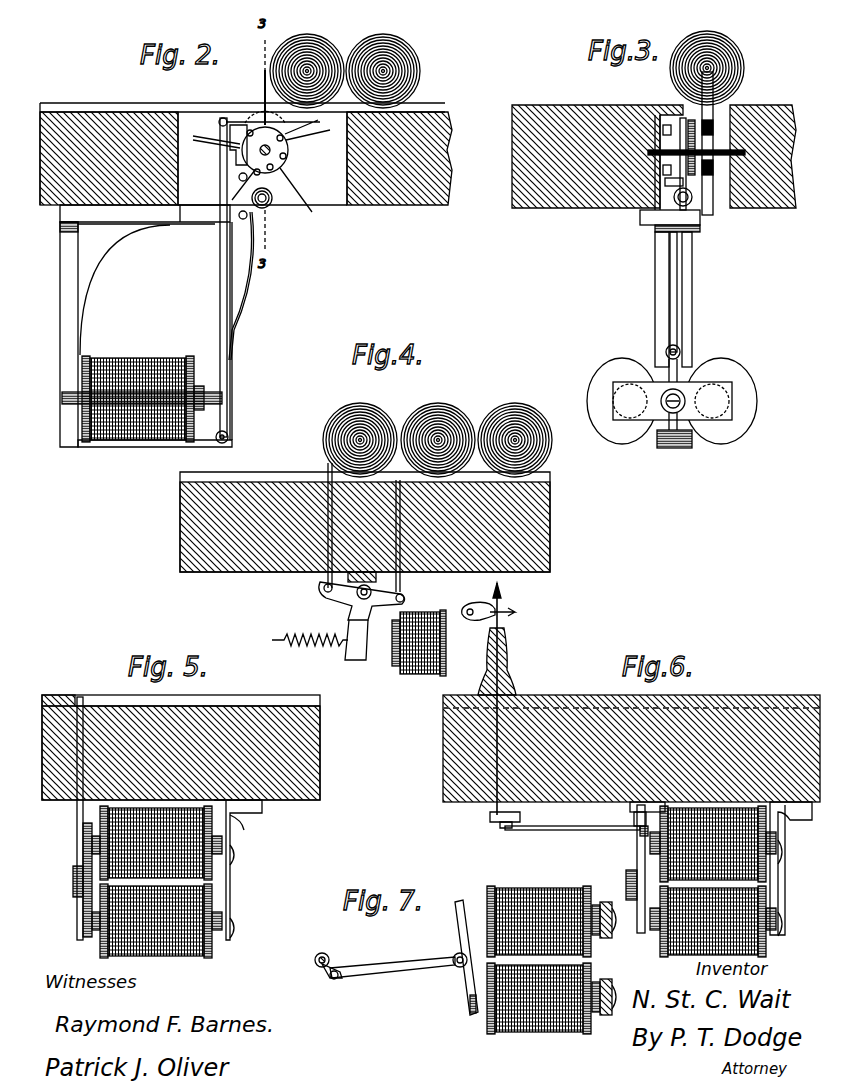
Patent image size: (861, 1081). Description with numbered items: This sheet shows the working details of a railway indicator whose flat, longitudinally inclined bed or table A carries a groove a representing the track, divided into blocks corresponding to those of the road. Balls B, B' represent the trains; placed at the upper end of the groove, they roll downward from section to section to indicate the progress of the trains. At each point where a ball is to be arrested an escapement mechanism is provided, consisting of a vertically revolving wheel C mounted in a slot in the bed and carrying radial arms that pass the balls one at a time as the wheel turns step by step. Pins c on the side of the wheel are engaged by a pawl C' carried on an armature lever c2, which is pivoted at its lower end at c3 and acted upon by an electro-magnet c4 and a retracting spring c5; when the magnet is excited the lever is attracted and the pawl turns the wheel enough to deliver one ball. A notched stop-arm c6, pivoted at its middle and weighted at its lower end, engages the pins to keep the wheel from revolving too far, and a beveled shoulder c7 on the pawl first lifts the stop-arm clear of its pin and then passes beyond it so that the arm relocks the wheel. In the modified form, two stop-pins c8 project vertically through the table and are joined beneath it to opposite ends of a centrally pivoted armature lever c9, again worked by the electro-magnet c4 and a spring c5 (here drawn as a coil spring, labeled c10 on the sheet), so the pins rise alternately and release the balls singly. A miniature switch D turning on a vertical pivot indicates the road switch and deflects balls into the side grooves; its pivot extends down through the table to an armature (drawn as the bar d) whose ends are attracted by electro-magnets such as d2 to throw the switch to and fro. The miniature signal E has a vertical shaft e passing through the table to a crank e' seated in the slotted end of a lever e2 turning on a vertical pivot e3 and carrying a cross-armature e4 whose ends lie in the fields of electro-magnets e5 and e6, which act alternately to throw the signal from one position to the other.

In FIG. 2, the groove a is at (440, 104).
In FIG. 2, the bed or table A is at (257, 275).
In FIG. 2, the ball B is at (307, 61).
In FIG. 3, the ball B is at (715, 68).
In FIG. 2, the ball B' is at (383, 61).
In FIG. 2, the escapement wheel C is at (276, 142).
In FIG. 3, the escapement wheel C is at (715, 143).
In FIG. 2, the pawl C' is at (261, 158).
In FIG. 3, the pawl C' is at (657, 144).
In FIG. 2, the pins c is at (266, 154).
In FIG. 3, the pins c is at (665, 128).
In FIG. 2, the armature lever c2 is at (220, 170).
In FIG. 2, the pivot c3 is at (229, 437).
In FIG. 3, the pivot c3 is at (660, 446).
In FIG. 2, the electro-magnet c4 is at (146, 360).
In FIG. 3, the electro-magnet c4 is at (672, 388).
In FIG. 2, the retracting spring c5 is at (243, 285).
In FIG. 3, the retracting spring c5 is at (680, 280).
In FIG. 2, the notched stop-arm c6 is at (252, 190).
In FIG. 3, the notched stop-arm c6 is at (689, 194).
In FIG. 2, the beveled shoulder c7 is at (247, 125).
In FIG. 4, the stop-pins c8 is at (359, 527).
In FIG. 4, the armature lever c9 is at (362, 616).
In FIG. 4, the spring c10 is at (298, 634).
In FIG. 5, the miniature switch D is at (238, 694).
In FIG. 5, the armature bar d is at (76, 856).
In FIG. 5, the electro-magnet d2 is at (214, 870).
In FIG. 6, the miniature signal E is at (495, 699).
In FIG. 6, the vertical shaft e is at (493, 813).
In FIG. 7, the vertical shaft e is at (329, 949).
In FIG. 6, the crank e' is at (502, 834).
In FIG. 7, the crank e' is at (327, 979).
In FIG. 6, the lever e2 is at (572, 835).
In FIG. 7, the lever e2 is at (392, 975).
In FIG. 6, the vertical pivot e3 is at (636, 836).
In FIG. 7, the vertical pivot e3 is at (458, 968).
In FIG. 6, the cross-armature e4 is at (636, 880).
In FIG. 7, the cross-armature e4 is at (462, 908).
In FIG. 6, the electro-magnet e5 is at (551, 909).
In FIG. 7, the electro-magnet e5 is at (551, 1006).
In FIG. 6, the electro-magnet e6 is at (770, 888).